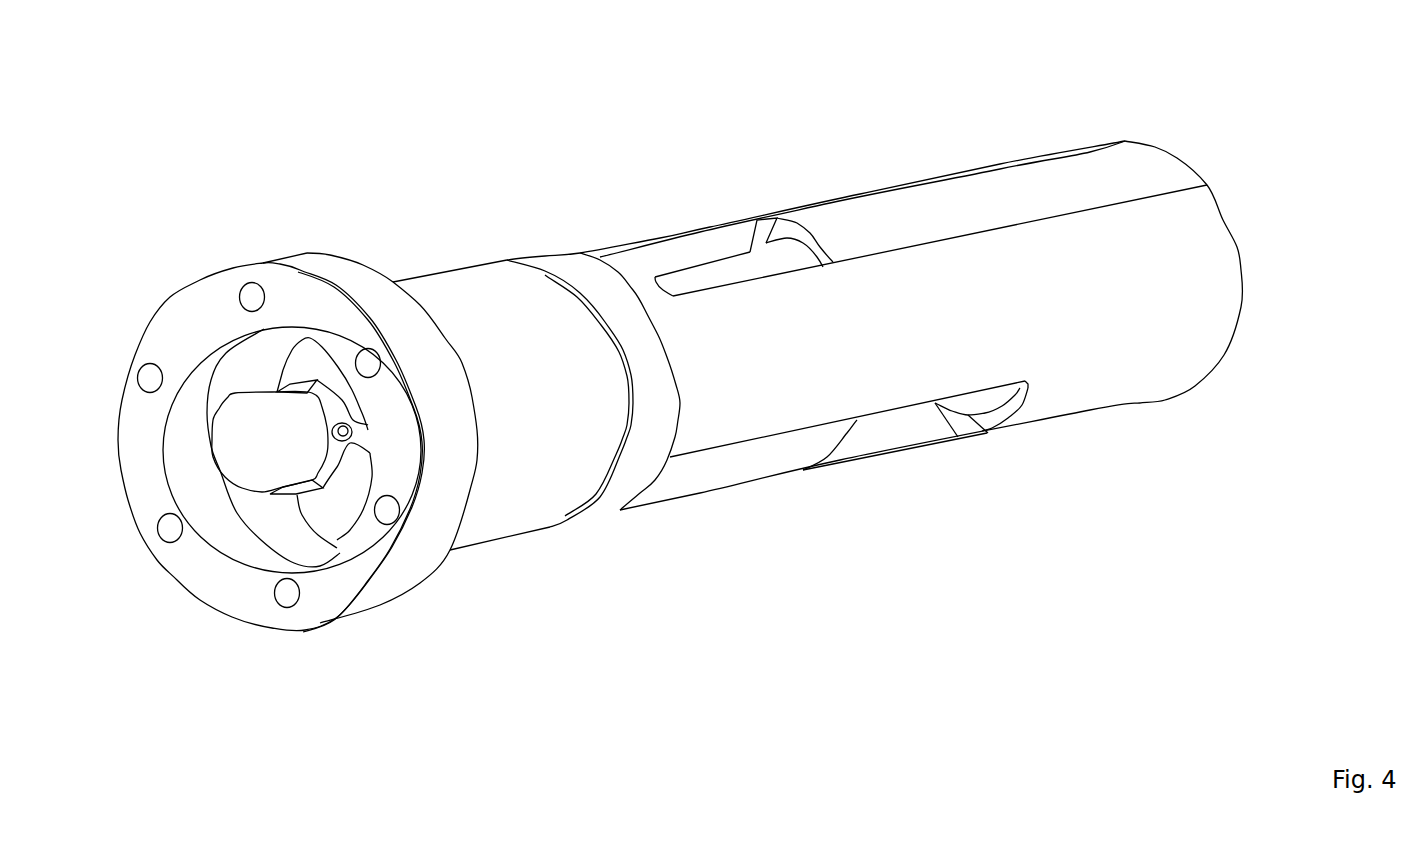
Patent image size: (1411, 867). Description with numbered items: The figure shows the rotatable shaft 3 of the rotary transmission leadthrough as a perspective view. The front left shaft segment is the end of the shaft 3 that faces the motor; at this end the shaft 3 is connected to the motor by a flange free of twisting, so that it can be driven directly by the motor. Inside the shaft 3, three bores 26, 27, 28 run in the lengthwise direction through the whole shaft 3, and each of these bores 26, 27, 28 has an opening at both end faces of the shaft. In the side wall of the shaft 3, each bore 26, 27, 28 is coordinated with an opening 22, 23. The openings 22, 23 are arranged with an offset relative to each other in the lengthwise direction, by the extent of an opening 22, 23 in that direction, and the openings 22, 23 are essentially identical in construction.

The rotatable shaft 3 is at (495, 283).
The opening 22 is at (703, 246).
The opening 23 is at (897, 421).
The bore 26 is at (322, 365).
The bore 27 is at (345, 492).
The bore 28 is at (253, 443).